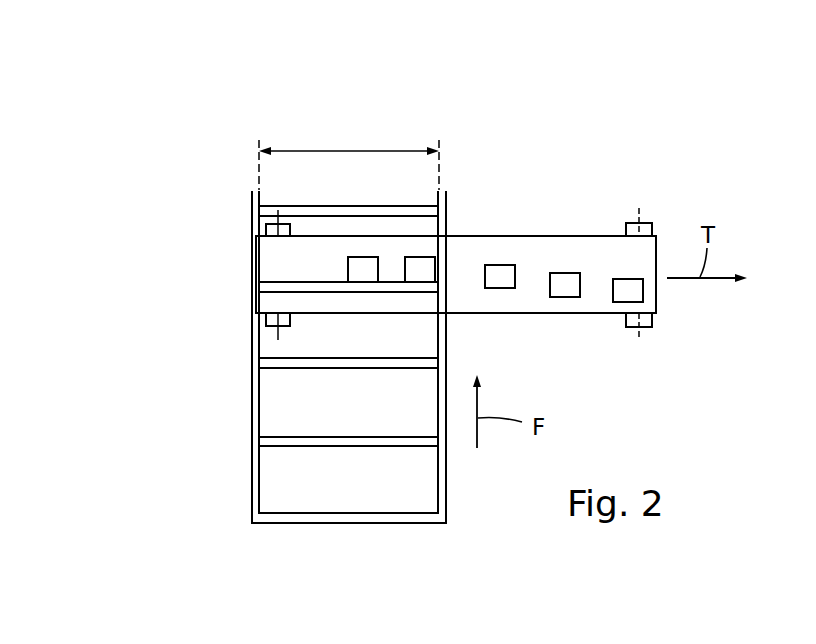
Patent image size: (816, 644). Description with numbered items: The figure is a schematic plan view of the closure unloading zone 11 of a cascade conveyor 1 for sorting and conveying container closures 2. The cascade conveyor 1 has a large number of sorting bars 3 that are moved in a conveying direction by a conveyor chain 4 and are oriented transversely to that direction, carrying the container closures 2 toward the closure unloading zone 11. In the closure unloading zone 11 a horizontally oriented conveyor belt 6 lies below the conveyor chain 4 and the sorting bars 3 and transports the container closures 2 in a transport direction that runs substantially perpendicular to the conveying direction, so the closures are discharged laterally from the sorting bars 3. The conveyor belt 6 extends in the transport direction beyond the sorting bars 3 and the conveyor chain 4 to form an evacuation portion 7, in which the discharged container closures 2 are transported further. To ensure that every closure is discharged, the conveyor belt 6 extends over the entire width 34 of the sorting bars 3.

The cascade conveyor 1 is at (119, 125).
The container closures 2 is at (500, 272).
The sorting bars 3 is at (303, 516).
The conveyor chain 4 is at (256, 408).
The conveyor belt 6 is at (587, 253).
The evacuation portion 7 is at (558, 133).
The closure unloading zone 11 is at (155, 272).
The width of the sorting bars 34 is at (349, 158).